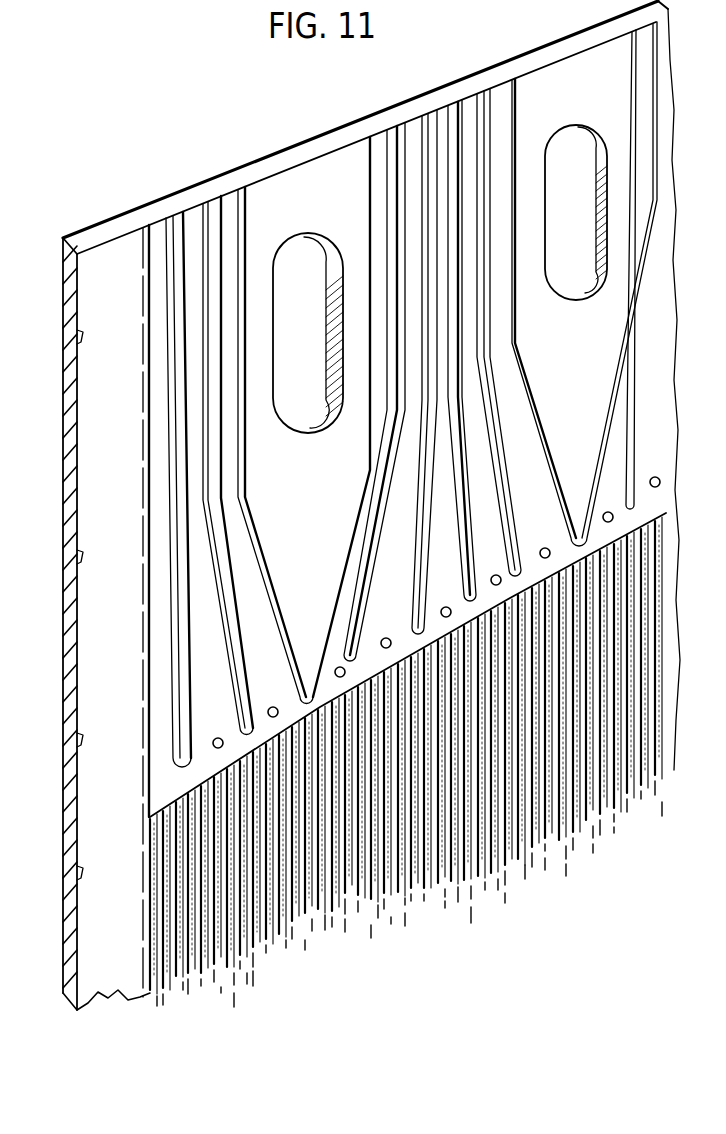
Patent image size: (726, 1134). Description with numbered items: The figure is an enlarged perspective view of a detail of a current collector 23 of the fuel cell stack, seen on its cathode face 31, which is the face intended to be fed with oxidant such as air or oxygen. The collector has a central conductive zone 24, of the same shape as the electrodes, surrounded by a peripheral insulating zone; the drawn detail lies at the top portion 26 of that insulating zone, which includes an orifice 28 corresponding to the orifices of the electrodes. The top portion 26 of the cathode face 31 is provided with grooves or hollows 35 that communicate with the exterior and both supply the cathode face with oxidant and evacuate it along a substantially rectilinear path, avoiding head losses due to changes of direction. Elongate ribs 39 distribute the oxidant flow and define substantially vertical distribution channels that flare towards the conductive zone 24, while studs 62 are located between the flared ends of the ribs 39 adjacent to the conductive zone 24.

The current collector 23 is at (163, 187).
The central conductive zone 24 is at (260, 882).
The top portion of the insulating zone 26 is at (100, 748).
The orifice 28 is at (300, 268).
The cathode face 31 is at (128, 255).
The grooves or hollows 35 is at (413, 123).
The ribs 39 is at (420, 495).
The studs 62 is at (268, 712).